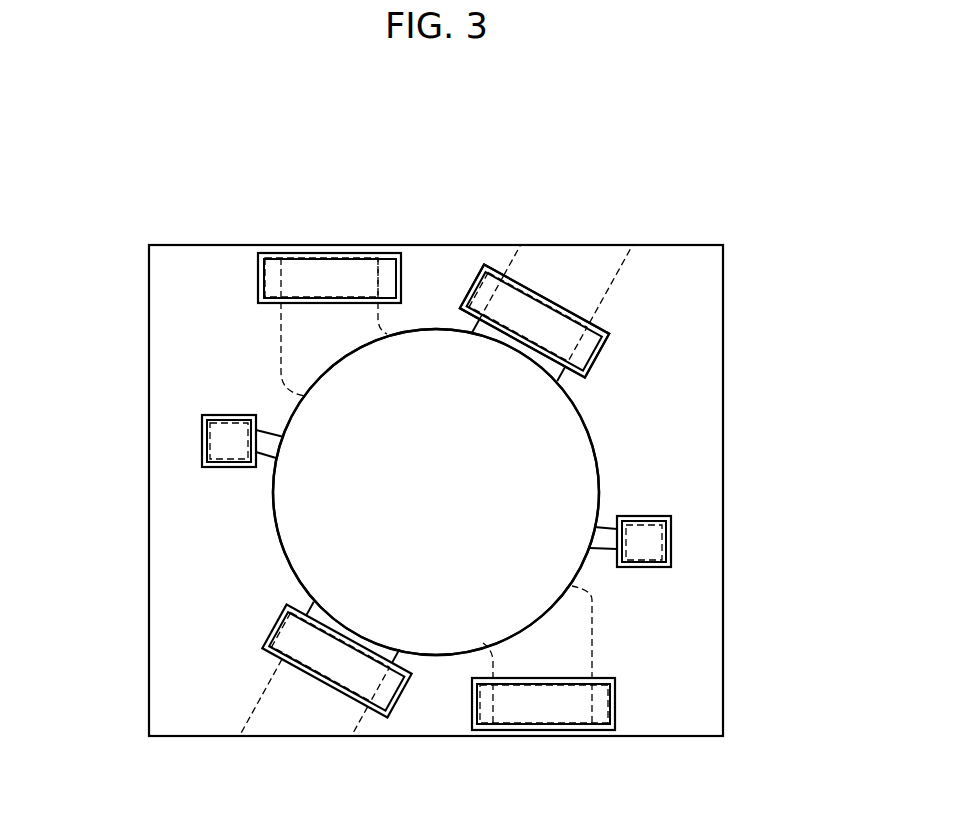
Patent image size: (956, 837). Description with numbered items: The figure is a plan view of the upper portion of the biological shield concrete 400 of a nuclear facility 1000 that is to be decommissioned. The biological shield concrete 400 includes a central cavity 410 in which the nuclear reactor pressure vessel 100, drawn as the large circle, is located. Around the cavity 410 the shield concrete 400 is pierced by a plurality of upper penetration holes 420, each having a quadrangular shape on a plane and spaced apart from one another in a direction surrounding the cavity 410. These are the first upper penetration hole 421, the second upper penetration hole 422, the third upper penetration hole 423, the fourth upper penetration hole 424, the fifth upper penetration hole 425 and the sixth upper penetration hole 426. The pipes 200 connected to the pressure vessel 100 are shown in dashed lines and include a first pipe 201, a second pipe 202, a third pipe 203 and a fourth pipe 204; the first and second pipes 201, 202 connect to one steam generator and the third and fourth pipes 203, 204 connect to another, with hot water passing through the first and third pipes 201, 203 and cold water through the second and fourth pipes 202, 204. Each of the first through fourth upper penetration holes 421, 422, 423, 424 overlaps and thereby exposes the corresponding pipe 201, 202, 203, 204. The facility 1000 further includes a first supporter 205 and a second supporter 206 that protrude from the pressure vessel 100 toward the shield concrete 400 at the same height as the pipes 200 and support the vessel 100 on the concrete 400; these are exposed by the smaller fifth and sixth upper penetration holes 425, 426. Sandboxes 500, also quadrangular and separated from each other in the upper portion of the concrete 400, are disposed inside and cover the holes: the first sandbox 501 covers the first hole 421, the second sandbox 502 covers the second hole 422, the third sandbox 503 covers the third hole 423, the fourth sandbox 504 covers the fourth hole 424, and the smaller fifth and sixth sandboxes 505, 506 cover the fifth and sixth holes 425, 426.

The nuclear facility 1000 is at (459, 146).
The nuclear reactor pressure vessel 100 is at (560, 437).
The biological shield concrete 400 is at (667, 358).
The cavity 410 is at (438, 398).
The upper penetration holes 420 is at (603, 327).
The first upper penetration hole 421 is at (517, 300).
The second upper penetration hole 422 is at (358, 278).
The third upper penetration hole 423 is at (346, 671).
The fourth upper penetration hole 424 is at (548, 702).
The fifth upper penetration hole 425 is at (239, 437).
The sixth upper penetration hole 426 is at (643, 538).
The pipes 200 is at (274, 345).
The first pipe 201 is at (491, 294).
The second pipe 202 is at (280, 272).
The third pipe 203 is at (286, 655).
The fourth pipe 204 is at (493, 698).
The first supporter 205 is at (220, 440).
The second supporter 206 is at (660, 541).
The sandboxes 500 is at (562, 302).
The first sandbox 501 is at (537, 283).
The second sandbox 502 is at (303, 253).
The third sandbox 503 is at (399, 700).
The fourth sandbox 504 is at (612, 731).
The fifth sandbox 505 is at (218, 473).
The sixth sandbox 506 is at (653, 565).